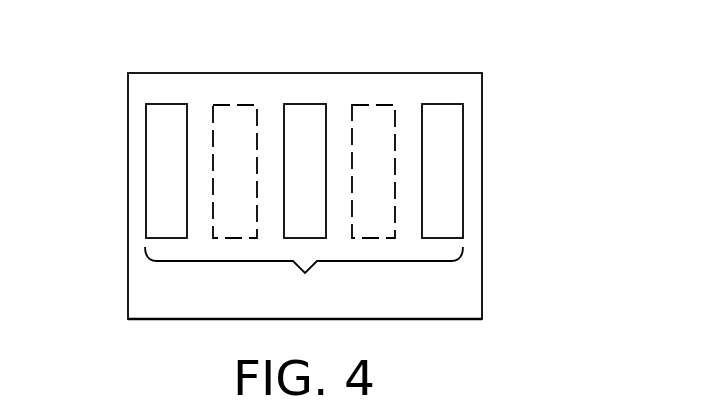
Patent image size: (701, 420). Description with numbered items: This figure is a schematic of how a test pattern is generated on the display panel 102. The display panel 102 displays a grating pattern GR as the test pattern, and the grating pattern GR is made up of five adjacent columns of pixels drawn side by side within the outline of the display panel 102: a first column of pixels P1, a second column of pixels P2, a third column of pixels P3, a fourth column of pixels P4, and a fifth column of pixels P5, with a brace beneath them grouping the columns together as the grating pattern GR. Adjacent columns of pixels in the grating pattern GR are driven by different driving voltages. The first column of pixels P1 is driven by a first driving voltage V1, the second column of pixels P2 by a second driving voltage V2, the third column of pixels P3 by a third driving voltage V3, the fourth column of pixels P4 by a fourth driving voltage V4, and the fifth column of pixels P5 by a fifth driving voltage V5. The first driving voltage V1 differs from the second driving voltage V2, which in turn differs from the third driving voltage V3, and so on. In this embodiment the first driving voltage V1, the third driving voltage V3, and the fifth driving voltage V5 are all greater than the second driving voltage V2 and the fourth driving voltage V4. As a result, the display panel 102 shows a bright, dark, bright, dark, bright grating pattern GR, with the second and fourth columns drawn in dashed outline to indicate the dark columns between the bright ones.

The display panel 102 is at (128, 197).
The first column of pixels P1 is at (152, 127).
The second column of pixels P2 is at (248, 127).
The third column of pixels P3 is at (328, 127).
The fourth column of pixels P4 is at (408, 127).
The fifth column of pixels P5 is at (492, 127).
The first driving voltage V1 is at (164, 125).
The second driving voltage V2 is at (242, 127).
The third driving voltage V3 is at (303, 128).
The fourth driving voltage V4 is at (376, 125).
The fifth driving voltage V5 is at (447, 132).
The grating pattern GR is at (304, 280).